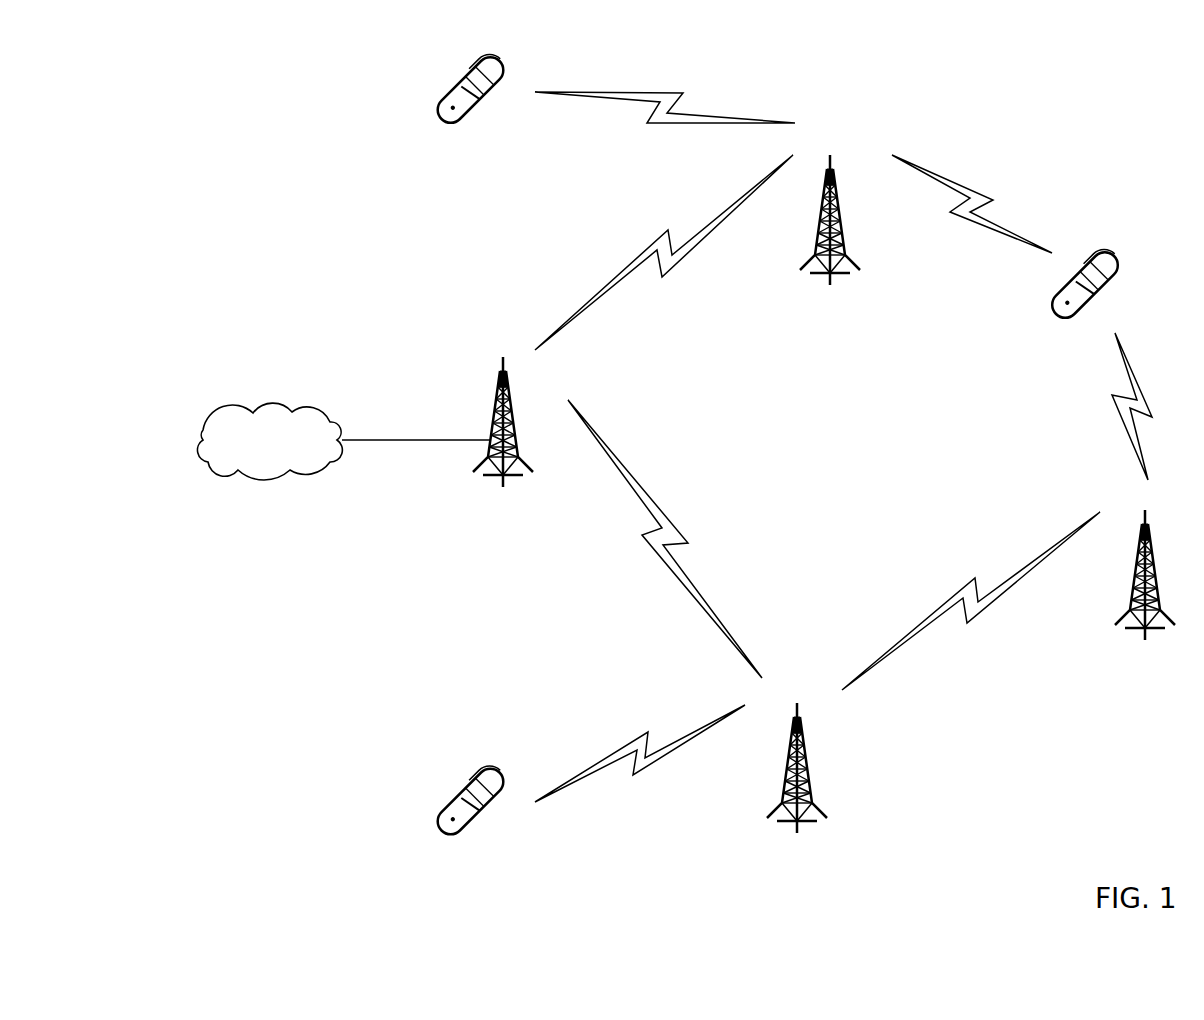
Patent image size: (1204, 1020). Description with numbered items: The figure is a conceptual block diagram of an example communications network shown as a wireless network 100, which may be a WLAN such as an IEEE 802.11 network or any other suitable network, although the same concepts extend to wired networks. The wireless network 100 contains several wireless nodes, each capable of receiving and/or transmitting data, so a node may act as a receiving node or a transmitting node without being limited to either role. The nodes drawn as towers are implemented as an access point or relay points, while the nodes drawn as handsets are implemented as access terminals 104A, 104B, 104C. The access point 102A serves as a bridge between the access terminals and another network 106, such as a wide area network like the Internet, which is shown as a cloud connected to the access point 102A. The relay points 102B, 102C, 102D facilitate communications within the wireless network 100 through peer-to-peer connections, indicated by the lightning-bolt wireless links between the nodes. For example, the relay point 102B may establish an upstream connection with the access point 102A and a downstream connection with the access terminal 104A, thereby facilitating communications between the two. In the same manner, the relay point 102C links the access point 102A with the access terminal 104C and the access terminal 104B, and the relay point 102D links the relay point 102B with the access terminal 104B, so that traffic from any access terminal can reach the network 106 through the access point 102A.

The wireless network 100 is at (960, 67).
The access point 102A is at (533, 519).
The relay point 102B is at (823, 875).
The relay point 102C is at (857, 327).
The relay point 102D is at (1161, 681).
The access terminal 104A is at (483, 876).
The access terminal 104B is at (1083, 342).
The access terminal 104C is at (483, 150).
The network 106 is at (284, 460).